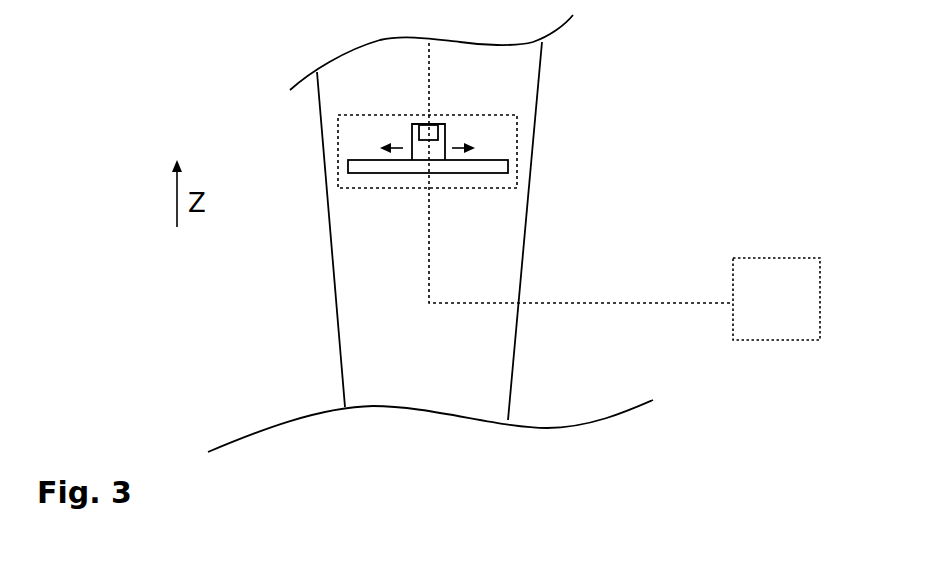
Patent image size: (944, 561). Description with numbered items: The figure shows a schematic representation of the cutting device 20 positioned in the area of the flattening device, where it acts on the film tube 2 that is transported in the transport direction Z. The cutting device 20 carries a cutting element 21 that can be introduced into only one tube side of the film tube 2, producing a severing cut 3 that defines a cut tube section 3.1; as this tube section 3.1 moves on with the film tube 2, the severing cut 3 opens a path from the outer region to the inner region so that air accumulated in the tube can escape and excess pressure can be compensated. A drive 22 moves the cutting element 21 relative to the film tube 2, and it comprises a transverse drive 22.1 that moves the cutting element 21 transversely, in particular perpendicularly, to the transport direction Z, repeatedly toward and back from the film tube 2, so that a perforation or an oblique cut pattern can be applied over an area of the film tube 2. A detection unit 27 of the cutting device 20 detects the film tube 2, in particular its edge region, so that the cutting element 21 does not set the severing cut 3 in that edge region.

The film tube 2 is at (482, 360).
The severing cut 3 is at (429, 70).
The tube section 3.1 is at (498, 82).
The cutting device 20 is at (407, 187).
The cutting element 21 is at (427, 154).
The drive 22 is at (761, 310).
The transverse drive 22.1 is at (435, 173).
The detection unit 27 is at (438, 132).